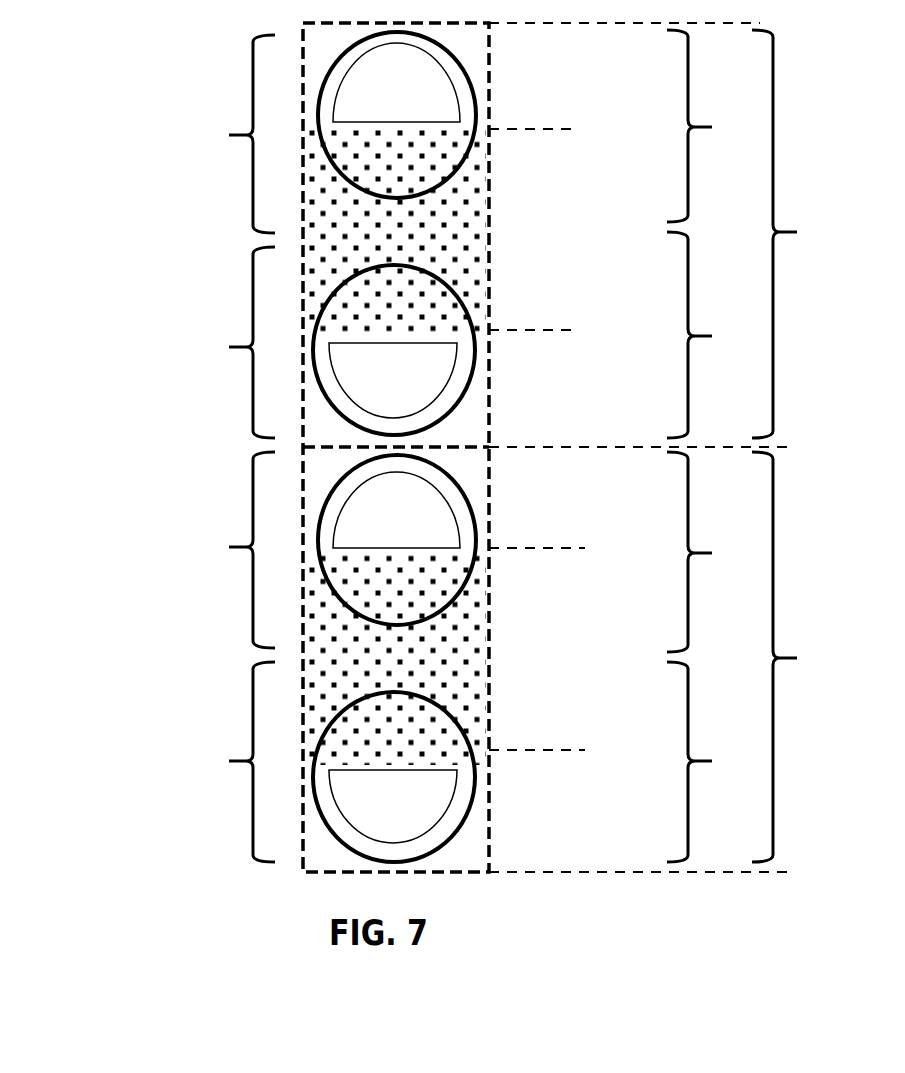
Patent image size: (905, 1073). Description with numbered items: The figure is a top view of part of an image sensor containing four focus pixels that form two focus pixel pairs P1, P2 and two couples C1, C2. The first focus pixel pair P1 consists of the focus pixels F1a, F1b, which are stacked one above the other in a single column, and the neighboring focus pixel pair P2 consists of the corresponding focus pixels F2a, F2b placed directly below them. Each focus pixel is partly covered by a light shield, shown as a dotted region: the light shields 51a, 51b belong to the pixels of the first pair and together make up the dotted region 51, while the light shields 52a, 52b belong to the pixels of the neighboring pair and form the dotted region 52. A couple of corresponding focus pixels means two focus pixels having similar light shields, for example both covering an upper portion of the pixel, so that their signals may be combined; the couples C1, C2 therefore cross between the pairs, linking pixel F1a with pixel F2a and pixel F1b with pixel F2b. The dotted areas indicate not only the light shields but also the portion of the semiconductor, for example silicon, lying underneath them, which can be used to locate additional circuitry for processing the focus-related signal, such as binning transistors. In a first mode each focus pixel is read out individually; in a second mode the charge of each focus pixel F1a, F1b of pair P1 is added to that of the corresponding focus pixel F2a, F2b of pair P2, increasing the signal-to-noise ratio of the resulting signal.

The first column of lenses C1 is at (230, 135).
The second column of lenses C2 is at (224, 348).
The first light-shielding region 51 is at (569, 330).
The light shield 51a is at (450, 200).
The light shield 51b is at (443, 255).
The second light-shielding region 52 is at (576, 750).
The light shield 52a is at (460, 635).
The light shield 52b is at (458, 677).
The focus pixel F1a is at (704, 126).
The focus pixel F1b is at (704, 335).
The focus pixel F2a is at (704, 552).
The focus pixel F2b is at (704, 762).
The first focus pixel pair P1 is at (784, 234).
The neighboring focus pixel pair P2 is at (784, 657).